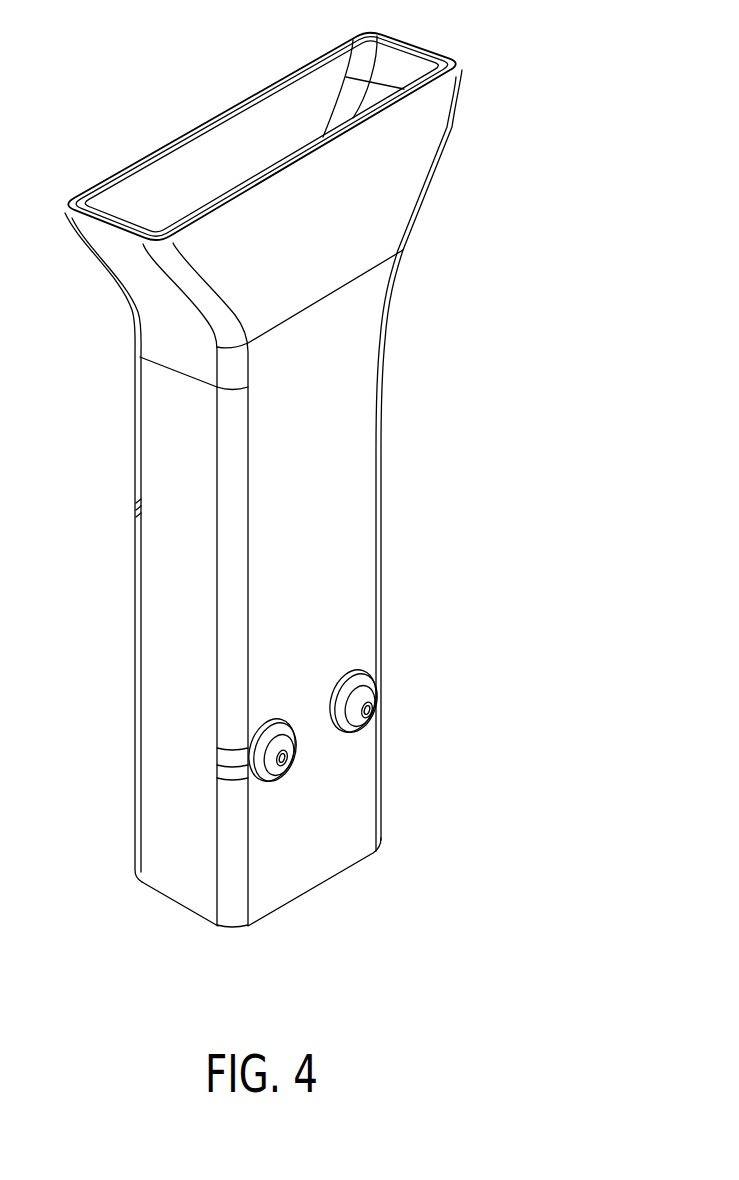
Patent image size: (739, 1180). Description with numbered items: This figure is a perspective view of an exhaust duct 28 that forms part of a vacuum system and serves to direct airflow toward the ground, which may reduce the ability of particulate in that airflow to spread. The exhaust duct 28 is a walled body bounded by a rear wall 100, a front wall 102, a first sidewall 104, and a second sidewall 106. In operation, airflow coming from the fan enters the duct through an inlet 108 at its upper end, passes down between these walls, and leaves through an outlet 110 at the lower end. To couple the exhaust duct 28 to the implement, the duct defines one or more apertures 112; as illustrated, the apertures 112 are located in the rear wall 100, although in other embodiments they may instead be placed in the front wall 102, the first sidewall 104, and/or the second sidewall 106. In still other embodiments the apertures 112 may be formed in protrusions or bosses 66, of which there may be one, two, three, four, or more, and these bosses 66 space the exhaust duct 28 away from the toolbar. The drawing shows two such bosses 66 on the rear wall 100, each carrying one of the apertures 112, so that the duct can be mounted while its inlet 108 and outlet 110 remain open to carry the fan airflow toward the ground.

The exhaust duct 28 is at (528, 568).
The bosses 66 is at (369, 718).
The rear wall 100 is at (293, 868).
The front wall 102 is at (138, 638).
The first sidewall 104 is at (382, 548).
The second sidewall 106 is at (168, 822).
The inlet 108 is at (152, 152).
The outlet 110 is at (233, 928).
The apertures 112 is at (281, 722).